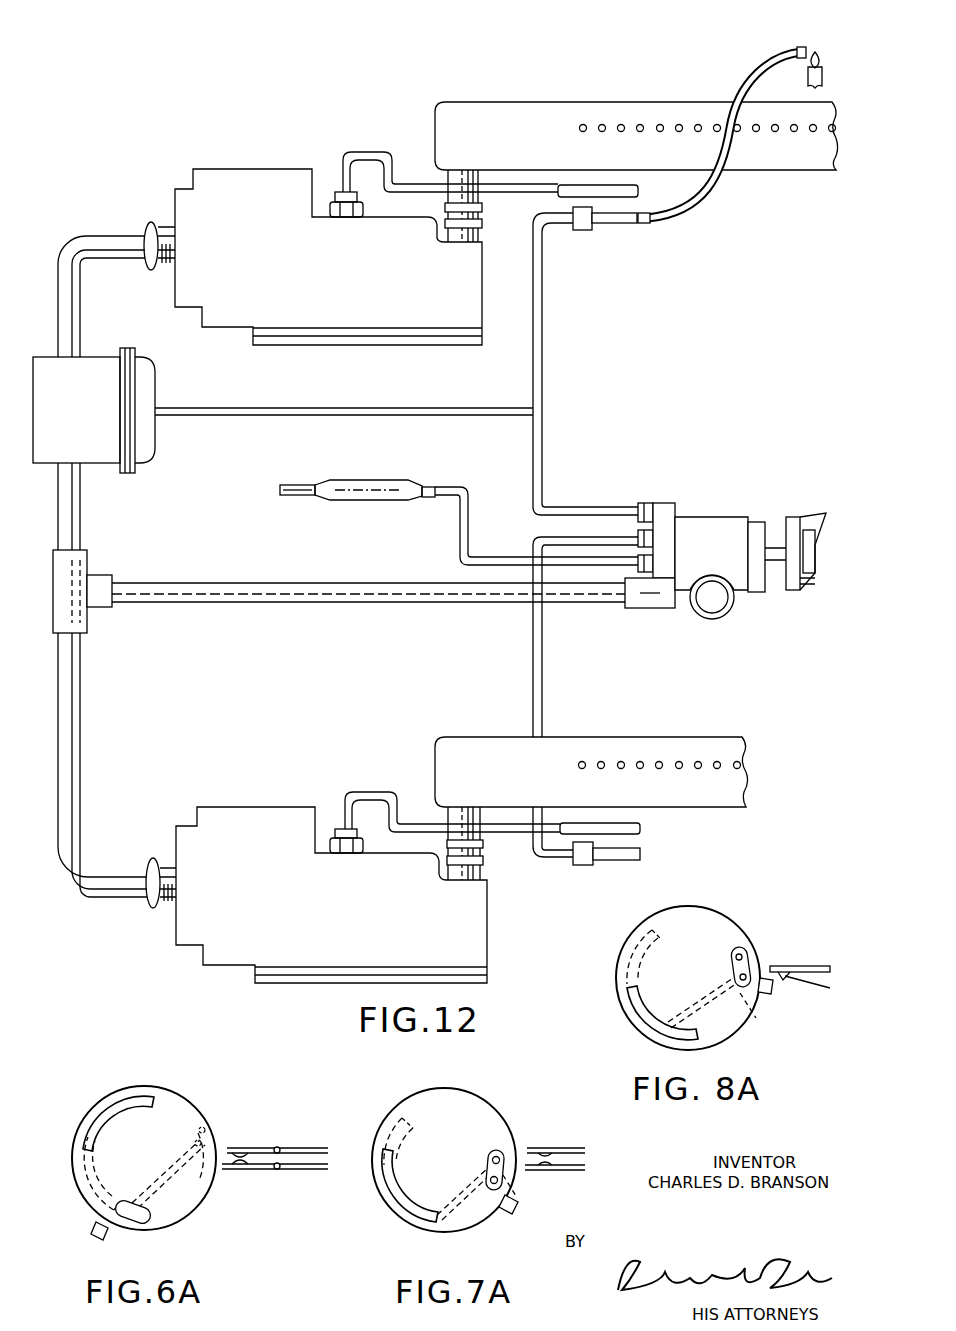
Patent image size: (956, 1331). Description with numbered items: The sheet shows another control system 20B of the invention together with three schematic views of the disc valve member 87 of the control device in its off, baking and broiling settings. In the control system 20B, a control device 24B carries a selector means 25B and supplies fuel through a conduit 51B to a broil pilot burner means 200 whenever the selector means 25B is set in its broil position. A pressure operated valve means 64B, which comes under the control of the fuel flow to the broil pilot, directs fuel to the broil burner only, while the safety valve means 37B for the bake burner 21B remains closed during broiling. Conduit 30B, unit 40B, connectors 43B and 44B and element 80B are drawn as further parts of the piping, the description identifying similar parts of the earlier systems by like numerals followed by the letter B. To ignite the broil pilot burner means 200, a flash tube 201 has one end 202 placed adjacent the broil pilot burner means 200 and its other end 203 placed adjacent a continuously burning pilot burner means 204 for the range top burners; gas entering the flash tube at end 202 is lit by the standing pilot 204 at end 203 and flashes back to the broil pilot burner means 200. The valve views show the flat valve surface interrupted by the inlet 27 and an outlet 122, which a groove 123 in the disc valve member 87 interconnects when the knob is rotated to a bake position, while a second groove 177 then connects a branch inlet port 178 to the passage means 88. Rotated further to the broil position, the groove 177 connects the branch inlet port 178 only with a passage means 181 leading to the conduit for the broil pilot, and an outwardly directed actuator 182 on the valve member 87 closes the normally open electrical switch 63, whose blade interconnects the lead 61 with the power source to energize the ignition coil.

In FIG. 12, the control system 20B is at (742, 327).
In FIG. 12, the bake burner 21B is at (705, 740).
In FIG. 12, the control device 24B is at (719, 514).
In FIG. 12, the selector means 25B is at (805, 516).
In FIG. 12, the main conduit 30B is at (283, 605).
In FIG. 12, the safety valve means 37B is at (246, 803).
In FIG. 12, the upper pump unit 40B is at (246, 140).
In FIG. 12, the connector sleeve 43B is at (641, 191).
In FIG. 12, the connector sleeve 44B is at (643, 853).
In FIG. 12, the conduit 51B is at (545, 311).
In FIG. 12, the pressure operated valve means 64B is at (160, 379).
In FIG. 12, the filter 80B is at (372, 484).
In FIG. 12, the broil pilot burner means 200 is at (613, 224).
In FIG. 12, the flash tube 201 is at (742, 77).
In FIG. 12, the flash tube end 202 is at (652, 226).
In FIG. 12, the flash tube end 203 is at (798, 45).
In FIG. 12, the continuously burning pilot burner means 204 is at (823, 70).
In FIG. 8A, the disc valve member 87 is at (713, 919).
In FIG. 6A, the disc valve member 87 is at (185, 1112).
In FIG. 7A, the disc valve member 87 is at (467, 1105).
In FIG. 8A, the passage means 88 is at (765, 1021).
In FIG. 6A, the passage means 88 is at (214, 1185).
In FIG. 7A, the passage means 88 is at (518, 1181).
In FIG. 8A, the outlet 122 is at (626, 981).
In FIG. 6A, the outlet 122 is at (90, 1141).
In FIG. 7A, the outlet 122 is at (402, 1108).
In FIG. 8A, the groove 123 is at (645, 1010).
In FIG. 6A, the groove 123 is at (138, 1098).
In FIG. 7A, the groove 123 is at (400, 1205).
In FIG. 8A, the inlet 27 is at (666, 1019).
In FIG. 6A, the inlet 27 is at (95, 1210).
In FIG. 7A, the inlet 27 is at (420, 1218).
In FIG. 8A, the groove 177 is at (750, 952).
In FIG. 6A, the groove 177 is at (140, 1225).
In FIG. 7A, the groove 177 is at (505, 1178).
In FIG. 8A, the branch inlet port 178 is at (748, 975).
In FIG. 6A, the branch inlet port 178 is at (222, 1136).
In FIG. 7A, the branch inlet port 178 is at (499, 1158).
In FIG. 8A, the passage means 181 is at (745, 960).
In FIG. 6A, the passage means 181 is at (210, 1125).
In FIG. 7A, the passage means 181 is at (505, 1130).
In FIG. 8A, the actuator 182 is at (775, 990).
In FIG. 6A, the actuator 182 is at (103, 1238).
In FIG. 7A, the actuator 182 is at (508, 1212).
In FIG. 8A, the electrical switch 63 is at (814, 966).
In FIG. 6A, the electrical switch 63 is at (263, 1172).
In FIG. 7A, the electrical switch 63 is at (558, 1157).
In FIG. 6A, the lead 61 is at (307, 1170).